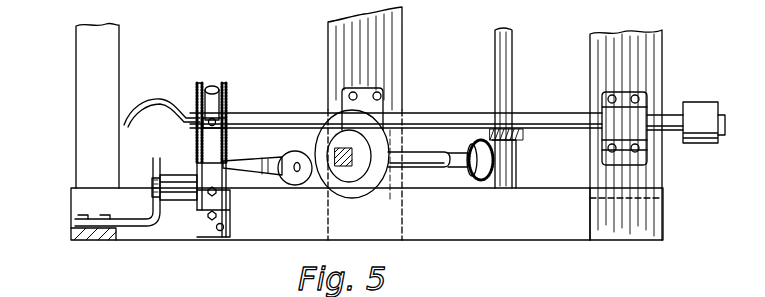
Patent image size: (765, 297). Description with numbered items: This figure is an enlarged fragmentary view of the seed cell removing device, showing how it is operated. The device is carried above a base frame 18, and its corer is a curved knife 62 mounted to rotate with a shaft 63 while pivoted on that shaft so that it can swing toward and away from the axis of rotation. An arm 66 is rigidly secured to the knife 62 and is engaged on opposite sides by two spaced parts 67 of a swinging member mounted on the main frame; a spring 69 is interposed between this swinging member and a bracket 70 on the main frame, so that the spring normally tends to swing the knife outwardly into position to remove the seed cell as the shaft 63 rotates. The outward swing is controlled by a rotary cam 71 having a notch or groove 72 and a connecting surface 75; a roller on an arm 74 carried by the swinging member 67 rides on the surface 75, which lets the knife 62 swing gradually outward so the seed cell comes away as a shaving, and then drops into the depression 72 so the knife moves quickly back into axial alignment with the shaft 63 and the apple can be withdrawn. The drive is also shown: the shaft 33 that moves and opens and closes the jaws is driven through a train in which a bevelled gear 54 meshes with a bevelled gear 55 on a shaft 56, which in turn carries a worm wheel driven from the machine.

The base frame 18 is at (85, 100).
The curved knife 62 is at (152, 100).
The spaced parts of swinging member 67 is at (199, 84).
The arm 66 is at (213, 85).
The shaft 63 is at (551, 112).
The cam surface 75 is at (322, 118).
The rotary cam 71 is at (372, 130).
The notch or groove 72 is at (392, 140).
The arm 74 is at (250, 160).
The shaft 33 is at (444, 168).
The bevelled gear 54 is at (484, 180).
The shaft 56 is at (512, 72).
The bevelled gear 55 is at (520, 140).
The spring 69 is at (183, 200).
The bracket 70 is at (140, 228).